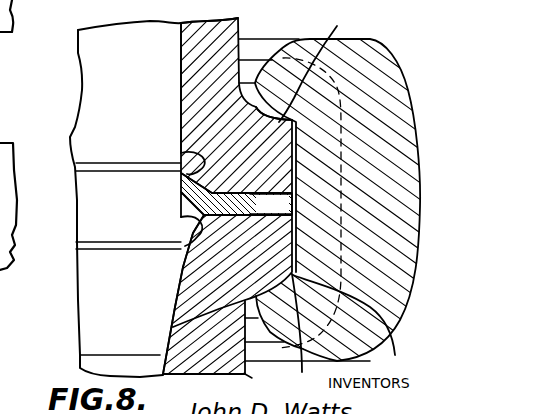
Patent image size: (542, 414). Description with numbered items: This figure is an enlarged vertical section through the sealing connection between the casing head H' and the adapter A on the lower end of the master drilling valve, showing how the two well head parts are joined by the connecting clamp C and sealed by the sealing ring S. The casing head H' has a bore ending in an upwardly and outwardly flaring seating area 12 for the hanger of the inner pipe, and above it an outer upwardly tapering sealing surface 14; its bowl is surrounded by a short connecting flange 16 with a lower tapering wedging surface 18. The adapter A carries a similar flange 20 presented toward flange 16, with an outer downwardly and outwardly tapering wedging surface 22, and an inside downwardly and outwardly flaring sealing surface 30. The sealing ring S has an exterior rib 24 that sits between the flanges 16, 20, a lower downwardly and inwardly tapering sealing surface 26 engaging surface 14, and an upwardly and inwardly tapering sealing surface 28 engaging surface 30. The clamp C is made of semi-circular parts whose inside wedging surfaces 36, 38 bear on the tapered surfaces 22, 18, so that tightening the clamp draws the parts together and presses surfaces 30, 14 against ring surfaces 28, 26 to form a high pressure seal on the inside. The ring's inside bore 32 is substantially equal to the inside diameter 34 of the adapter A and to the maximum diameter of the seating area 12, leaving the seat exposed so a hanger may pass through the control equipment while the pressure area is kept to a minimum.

The adapter A is at (240, 27).
The connecting clamp C is at (378, 78).
The sealing ring S is at (95, 224).
The seating area 12 is at (175, 309).
The sealing surface 14 is at (182, 257).
The connecting flange 16 is at (393, 339).
The wedging surface 18 is at (173, 332).
The flange 20 is at (208, 135).
The wedging surface 22 is at (257, 116).
The exterior rib 24 is at (247, 193).
The sealing surface 26 is at (182, 227).
The sealing surface 28 is at (181, 201).
The sealing surface 30 is at (183, 156).
The inside bore 32 is at (183, 182).
The inside diameter 34 is at (181, 53).
The wedging surface 36 is at (333, 33).
The wedging surface 38 is at (301, 335).
The casing head H' is at (212, 392).